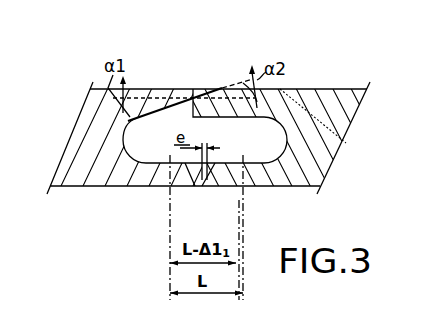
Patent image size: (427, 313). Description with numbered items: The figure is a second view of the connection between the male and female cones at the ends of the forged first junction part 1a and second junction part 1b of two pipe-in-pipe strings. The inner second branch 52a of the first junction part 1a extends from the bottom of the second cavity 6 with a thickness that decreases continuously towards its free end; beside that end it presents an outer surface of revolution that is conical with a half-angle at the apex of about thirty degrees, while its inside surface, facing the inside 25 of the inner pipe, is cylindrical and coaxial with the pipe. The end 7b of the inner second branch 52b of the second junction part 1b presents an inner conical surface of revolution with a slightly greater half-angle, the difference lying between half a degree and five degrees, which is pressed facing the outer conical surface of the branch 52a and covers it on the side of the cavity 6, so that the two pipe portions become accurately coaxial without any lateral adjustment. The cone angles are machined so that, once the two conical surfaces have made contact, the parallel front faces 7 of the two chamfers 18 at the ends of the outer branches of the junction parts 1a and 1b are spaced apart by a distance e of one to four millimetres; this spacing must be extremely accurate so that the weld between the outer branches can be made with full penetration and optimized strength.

The first junction part 1a is at (120, 205).
The second junction part 1b is at (310, 64).
The inside of the inner pipe 25 is at (351, 66).
The inner second branch of the first junction part 52a is at (187, 89).
The inner second branch of the second junction part 52b is at (215, 88).
The end of the inner second branch of the second junction part 7b is at (189, 113).
The second cavity 6 is at (266, 150).
The front faces 7 is at (206, 172).
The chamfers 18 is at (208, 187).